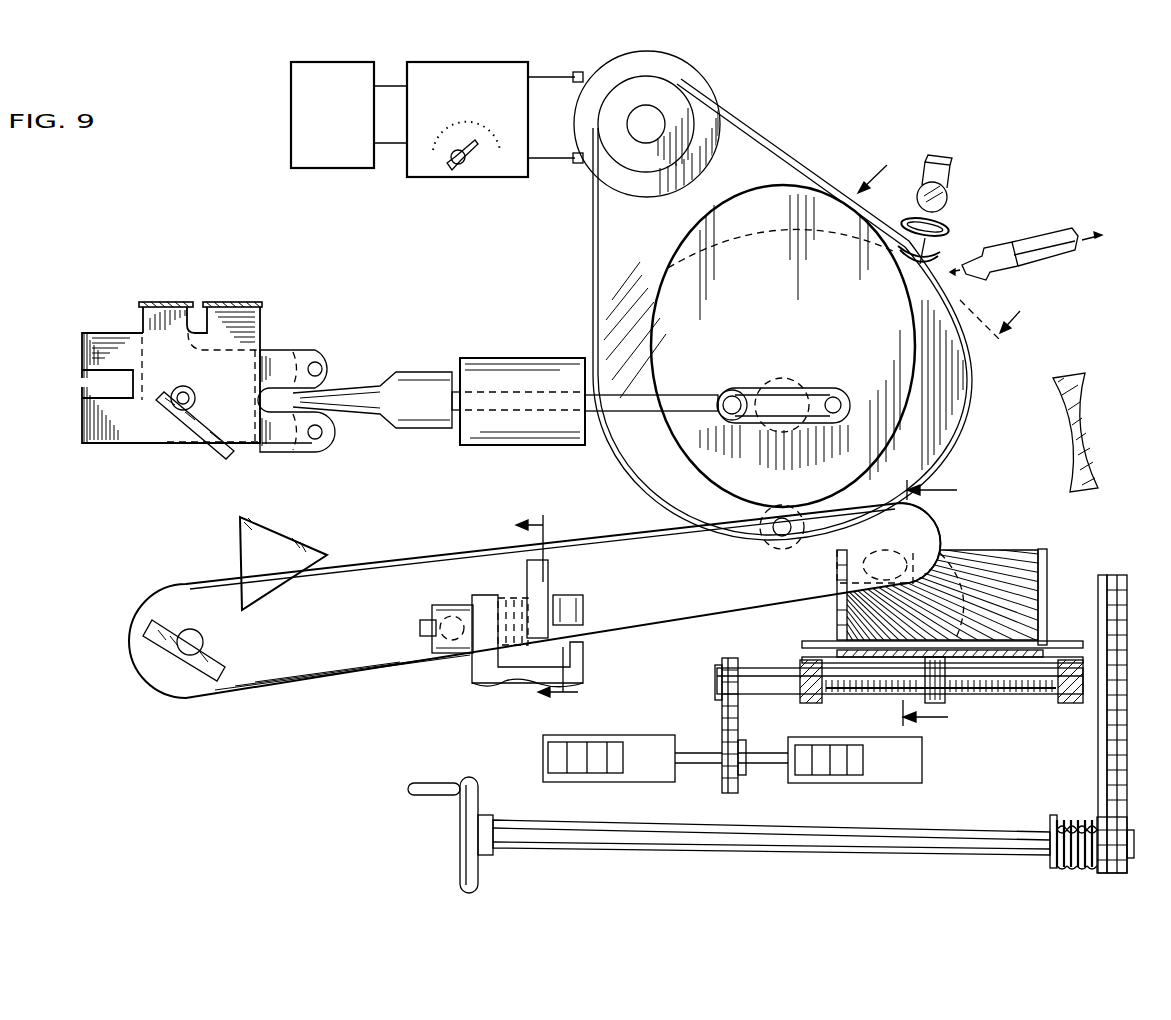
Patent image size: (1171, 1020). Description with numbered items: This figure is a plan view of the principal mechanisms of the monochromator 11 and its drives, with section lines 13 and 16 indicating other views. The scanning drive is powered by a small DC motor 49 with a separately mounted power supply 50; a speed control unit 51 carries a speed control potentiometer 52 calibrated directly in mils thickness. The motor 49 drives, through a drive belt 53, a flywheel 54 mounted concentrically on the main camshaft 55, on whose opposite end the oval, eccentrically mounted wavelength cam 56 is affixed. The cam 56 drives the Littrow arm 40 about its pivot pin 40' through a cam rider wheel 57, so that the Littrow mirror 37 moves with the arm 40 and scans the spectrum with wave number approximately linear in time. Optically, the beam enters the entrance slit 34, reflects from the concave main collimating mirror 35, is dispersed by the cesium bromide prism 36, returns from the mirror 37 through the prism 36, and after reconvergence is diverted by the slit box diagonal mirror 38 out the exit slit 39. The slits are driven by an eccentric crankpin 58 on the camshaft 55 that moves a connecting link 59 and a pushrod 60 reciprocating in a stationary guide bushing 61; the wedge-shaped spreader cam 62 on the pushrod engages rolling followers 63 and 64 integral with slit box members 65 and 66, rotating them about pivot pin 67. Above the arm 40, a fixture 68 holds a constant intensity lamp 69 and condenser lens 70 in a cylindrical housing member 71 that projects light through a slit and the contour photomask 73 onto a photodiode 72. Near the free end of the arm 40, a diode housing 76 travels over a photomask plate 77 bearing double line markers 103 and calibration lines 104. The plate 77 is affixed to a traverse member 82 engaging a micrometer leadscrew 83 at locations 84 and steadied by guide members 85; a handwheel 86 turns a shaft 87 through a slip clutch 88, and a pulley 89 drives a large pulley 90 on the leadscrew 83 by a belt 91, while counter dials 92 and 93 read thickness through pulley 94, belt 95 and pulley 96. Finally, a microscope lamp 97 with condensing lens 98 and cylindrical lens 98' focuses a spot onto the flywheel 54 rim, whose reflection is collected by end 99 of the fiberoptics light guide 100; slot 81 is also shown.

The monochromator 11 is at (547, 607).
The section line 13- 13 is at (948, 604).
The section line 16- 16 is at (951, 243).
The entrance slit 34 is at (82, 345).
The main collimating mirror 35 is at (1086, 375).
The cesium bromide prism 36 is at (330, 556).
The Littrow mirror 37 is at (152, 626).
The slit box diagonal mirror 38 is at (216, 452).
The exit slit 39 is at (206, 302).
The Littrow arm 40 is at (535, 608).
The pivot pin 40' is at (185, 599).
The DC motor 49 is at (680, 64).
The power supply 50 is at (291, 64).
The speed control unit 51 is at (428, 62).
The speed control potentiometer 52 is at (470, 162).
The drive belt 53 is at (592, 236).
The flywheel 54 is at (660, 292).
The main camshaft 55 is at (806, 378).
The wavelength cam 56 is at (694, 240).
The cam rider wheel 57 is at (768, 520).
The eccentric crankpin 58 is at (843, 398).
The connecting link 59 is at (742, 388).
The pushrod 60 is at (622, 413).
The guide bushing 61 is at (506, 358).
The spreader cam 62 is at (424, 372).
The rolling follower 63 is at (336, 366).
The rolling follower 64 is at (335, 442).
The slit box member 65 is at (290, 350).
The slit box member 66 is at (283, 444).
The pivot pin 67 is at (196, 397).
The fixture 68 is at (478, 678).
The constant intensity lamp 69 is at (426, 620).
The condenser lens 70 is at (516, 600).
The cylindrical housing member 71 is at (455, 605).
The photodiode 72 is at (585, 609).
The contour photomask 73 is at (548, 582).
The diode housing 76 is at (936, 540).
The photomask plate 77 is at (1002, 552).
The slot 81 is at (837, 612).
The traverse member 82 is at (946, 662).
The micrometer leadscrew 83 is at (1026, 694).
The leadscrew engagement location 84 is at (1068, 704).
The guide members 85 is at (805, 645).
The handwheel 86 is at (463, 858).
The shaft 87 is at (812, 858).
The slip clutch 88 is at (1072, 868).
The pulley 89 is at (1097, 830).
The large pulley 90 is at (1100, 580).
The belt 91 is at (1118, 578).
The counter dial 92 is at (543, 758).
The counter dial 93 is at (922, 760).
The pulley 94 is at (730, 665).
The belt 95 is at (722, 714).
The pulley 96 is at (738, 786).
The microscope lamp 97 is at (950, 172).
The condensing lens 98 is at (943, 223).
The cylindrical lens 98' is at (940, 248).
The light guide end 99 is at (1000, 250).
The fiberoptics light guide 100 is at (1050, 236).
The double line markers 103 is at (838, 582).
The calibration lines 104 is at (1048, 552).